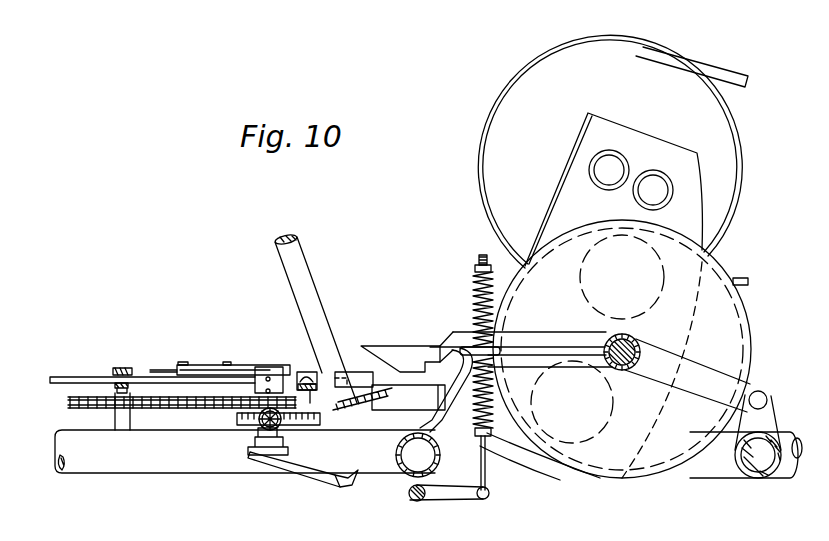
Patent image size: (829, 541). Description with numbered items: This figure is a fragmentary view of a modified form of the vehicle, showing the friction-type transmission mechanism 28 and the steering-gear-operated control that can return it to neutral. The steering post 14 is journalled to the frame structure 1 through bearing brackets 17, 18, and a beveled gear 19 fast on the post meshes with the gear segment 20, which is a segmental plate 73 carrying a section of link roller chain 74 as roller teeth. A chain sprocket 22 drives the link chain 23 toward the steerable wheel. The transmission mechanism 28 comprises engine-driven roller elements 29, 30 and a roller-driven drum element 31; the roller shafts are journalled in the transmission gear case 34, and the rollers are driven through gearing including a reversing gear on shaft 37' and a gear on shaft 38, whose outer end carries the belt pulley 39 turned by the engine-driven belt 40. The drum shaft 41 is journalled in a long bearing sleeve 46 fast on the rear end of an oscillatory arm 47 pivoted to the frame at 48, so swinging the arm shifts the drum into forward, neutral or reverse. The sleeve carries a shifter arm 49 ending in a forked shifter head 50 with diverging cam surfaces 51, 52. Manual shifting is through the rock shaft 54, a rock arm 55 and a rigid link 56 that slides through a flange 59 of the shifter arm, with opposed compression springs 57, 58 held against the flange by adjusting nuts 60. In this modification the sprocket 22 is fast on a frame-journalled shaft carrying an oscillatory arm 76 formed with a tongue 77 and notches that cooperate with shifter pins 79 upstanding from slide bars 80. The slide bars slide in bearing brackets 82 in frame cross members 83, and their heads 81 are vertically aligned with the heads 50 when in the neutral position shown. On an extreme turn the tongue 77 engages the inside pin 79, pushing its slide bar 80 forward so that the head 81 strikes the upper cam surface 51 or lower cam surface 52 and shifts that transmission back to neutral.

The frame structure 1 is at (694, 490).
The steering post 14 is at (302, 265).
The bearing bracket 17 is at (345, 458).
The bearing bracket 18 is at (350, 476).
The beveled gear 19 is at (356, 395).
The gear segment 20 is at (257, 420).
The chain sprocket 22 is at (276, 400).
The link chain 23 is at (196, 406).
The transmission mechanism 28 is at (730, 342).
The roller element 29 is at (700, 272).
The roller element 30 is at (592, 440).
The drum element 31 is at (725, 310).
The transmission gear case 34 is at (690, 204).
The shaft 37' is at (663, 161).
The shaft 38 is at (610, 165).
The belt pulley 39 is at (552, 112).
The engine-driven belt 40 is at (722, 70).
The drum shaft 41 is at (622, 342).
The bearing sleeve 46 is at (640, 346).
The oscillatory arm 47 is at (705, 374).
The pivot 48 is at (762, 397).
The shifter arm 49 is at (540, 334).
The shifter head 50 is at (410, 348).
The cam surface 51 is at (384, 352).
The cam surface 52 is at (388, 396).
The rock shaft 54 is at (417, 500).
The rock arm 55 is at (460, 496).
The rigid link 56 is at (486, 470).
The compression spring 57 is at (488, 306).
The compression spring 58 is at (525, 404).
The flange 59 is at (558, 352).
The compression adjusting nut 60 is at (483, 266).
The segmental plate 73 is at (242, 422).
The link roller chain section 74 is at (255, 430).
The oscillatory arm 76 is at (206, 365).
The tongue 77 is at (182, 362).
The shifter pin 79 is at (229, 362).
The slide bar 80 is at (158, 370).
The head 81 is at (365, 372).
The bearing bracket 82 is at (120, 368).
The frame cross member 83 is at (318, 384).